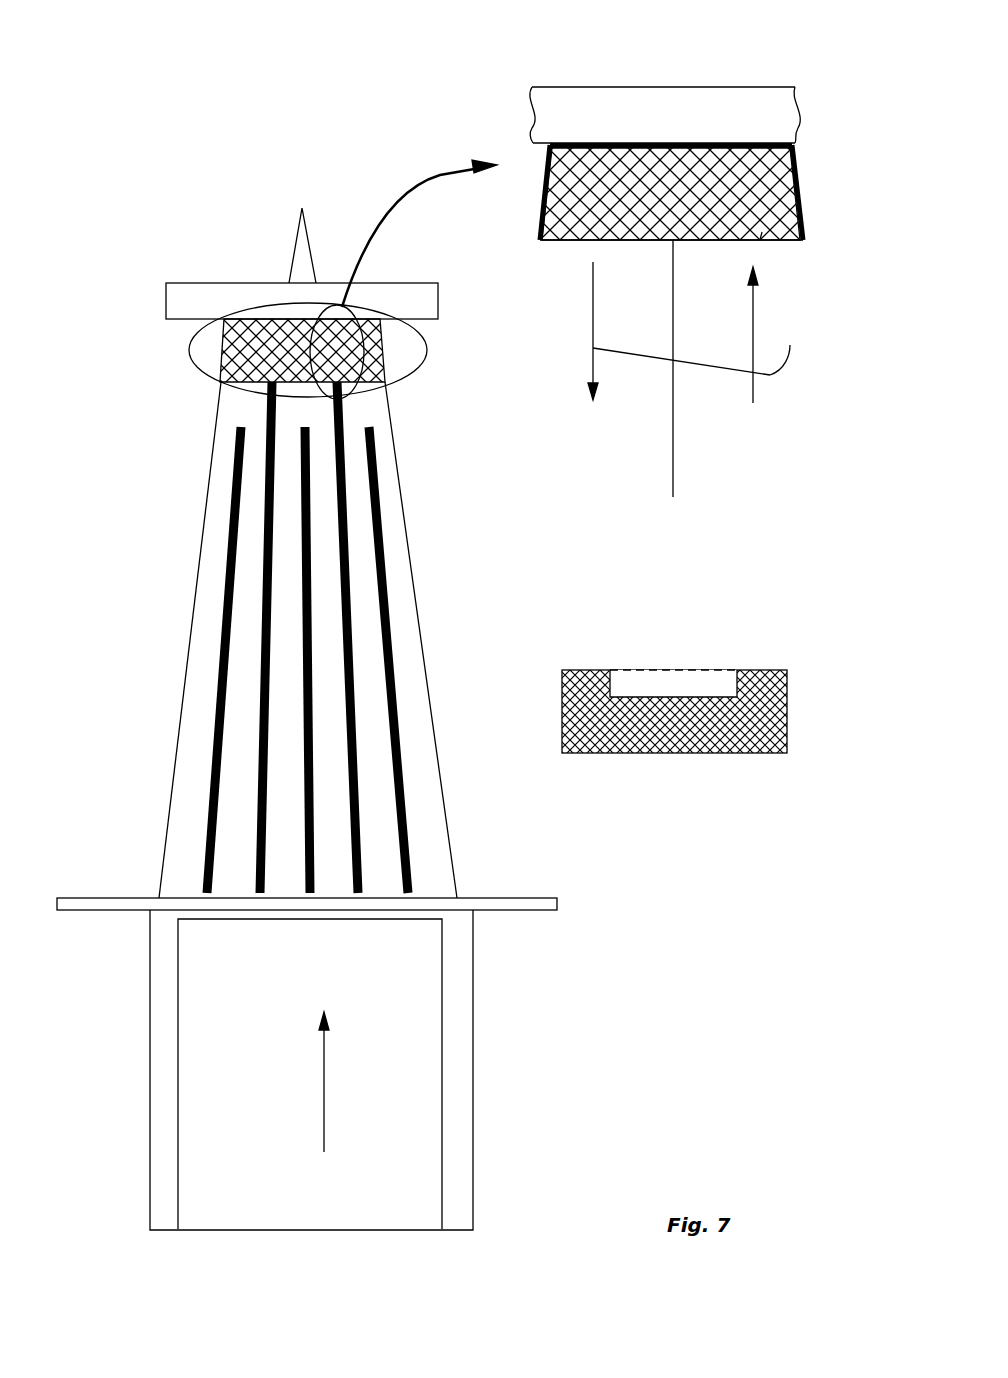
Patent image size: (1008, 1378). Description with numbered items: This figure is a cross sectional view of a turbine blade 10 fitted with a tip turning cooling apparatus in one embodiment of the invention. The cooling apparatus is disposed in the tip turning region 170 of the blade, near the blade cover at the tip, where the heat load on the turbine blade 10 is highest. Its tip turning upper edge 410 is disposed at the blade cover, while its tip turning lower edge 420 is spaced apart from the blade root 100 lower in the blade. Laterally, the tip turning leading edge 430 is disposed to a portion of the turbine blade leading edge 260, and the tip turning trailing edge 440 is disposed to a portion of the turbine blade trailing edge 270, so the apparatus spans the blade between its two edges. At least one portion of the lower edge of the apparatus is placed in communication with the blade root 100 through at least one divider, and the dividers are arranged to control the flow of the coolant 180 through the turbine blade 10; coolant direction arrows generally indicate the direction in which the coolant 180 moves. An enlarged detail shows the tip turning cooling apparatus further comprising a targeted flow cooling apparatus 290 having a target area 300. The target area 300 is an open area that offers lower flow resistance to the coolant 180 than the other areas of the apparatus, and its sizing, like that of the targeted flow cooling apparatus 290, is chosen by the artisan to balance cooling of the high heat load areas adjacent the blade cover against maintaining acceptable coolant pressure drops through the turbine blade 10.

The turbine blade 10 is at (308, 706).
The blade root 100 is at (478, 910).
The tip turning region 170 is at (332, 398).
The coolant 180 is at (270, 1194).
The turbine blade leading edge 260 is at (205, 495).
The turbine blade trailing edge 270 is at (403, 487).
The targeted flow cooling apparatus 290 is at (685, 737).
The target area 300 is at (647, 680).
The tip turning upper edge 410 is at (797, 152).
The tip turning lower edge 420 is at (748, 220).
The tip turning leading edge 430 is at (542, 205).
The tip turning trailing edge 440 is at (802, 200).